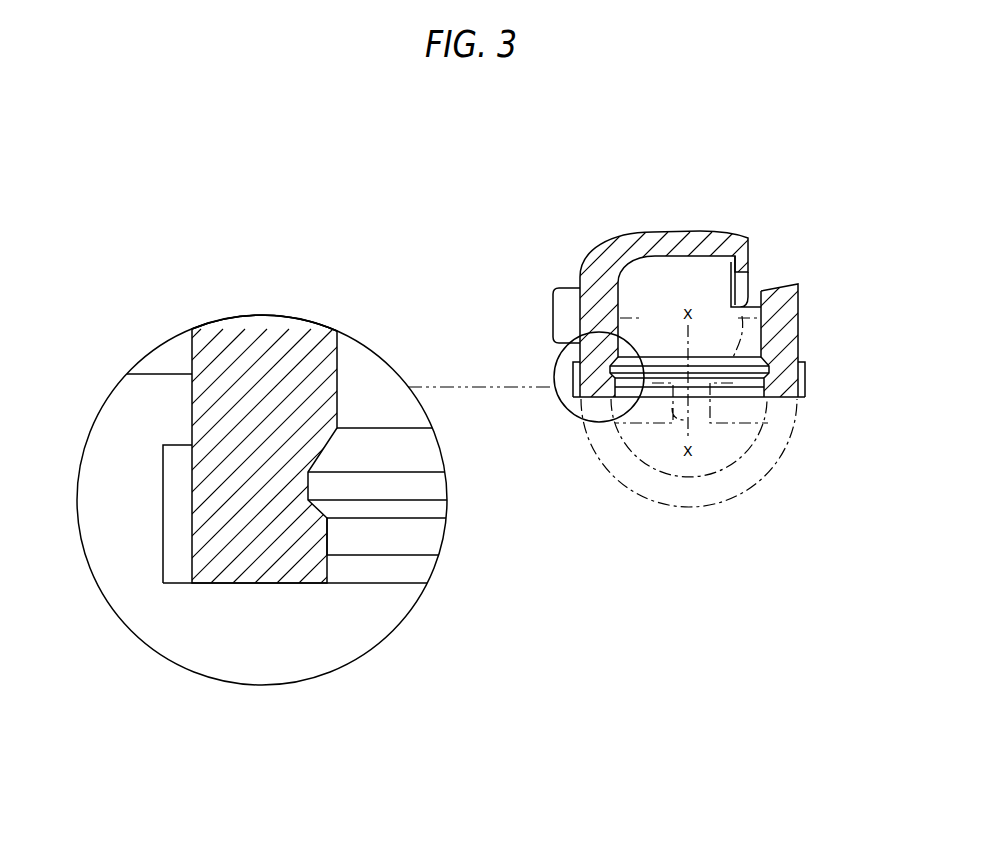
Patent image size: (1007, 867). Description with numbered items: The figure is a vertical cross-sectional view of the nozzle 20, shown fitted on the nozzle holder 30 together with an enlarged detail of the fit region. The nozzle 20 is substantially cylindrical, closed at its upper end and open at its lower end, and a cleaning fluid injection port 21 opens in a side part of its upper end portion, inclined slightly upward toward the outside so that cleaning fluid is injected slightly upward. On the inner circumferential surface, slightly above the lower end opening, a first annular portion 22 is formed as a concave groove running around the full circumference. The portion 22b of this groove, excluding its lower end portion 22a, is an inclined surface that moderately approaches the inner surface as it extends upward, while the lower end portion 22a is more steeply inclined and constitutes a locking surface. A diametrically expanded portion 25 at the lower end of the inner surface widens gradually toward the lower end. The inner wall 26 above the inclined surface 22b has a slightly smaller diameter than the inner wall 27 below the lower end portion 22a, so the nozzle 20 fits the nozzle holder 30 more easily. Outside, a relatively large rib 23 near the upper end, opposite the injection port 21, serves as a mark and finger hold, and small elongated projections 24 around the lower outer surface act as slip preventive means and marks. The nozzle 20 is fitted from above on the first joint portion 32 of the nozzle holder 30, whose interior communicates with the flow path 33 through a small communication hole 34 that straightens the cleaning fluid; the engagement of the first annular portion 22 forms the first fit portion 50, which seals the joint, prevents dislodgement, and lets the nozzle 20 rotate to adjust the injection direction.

The nozzle 20 is at (559, 192).
The cleaning fluid injection port 21 is at (751, 292).
The first annular portion 22 is at (760, 360).
The lower end portion 22a is at (322, 507).
The inclined surface 22b is at (320, 463).
The rib 23 is at (561, 292).
The small elongated projections 24 is at (574, 392).
The diametrically expanded portion 25 is at (619, 396).
The inner wall 26 is at (343, 362).
The inner wall 27 is at (329, 537).
The nozzle holder 30 is at (722, 503).
The first joint portion 32 is at (636, 358).
The flow path 33 is at (737, 440).
The communication hole 34 is at (672, 430).
The first fit portion 50 is at (575, 350).